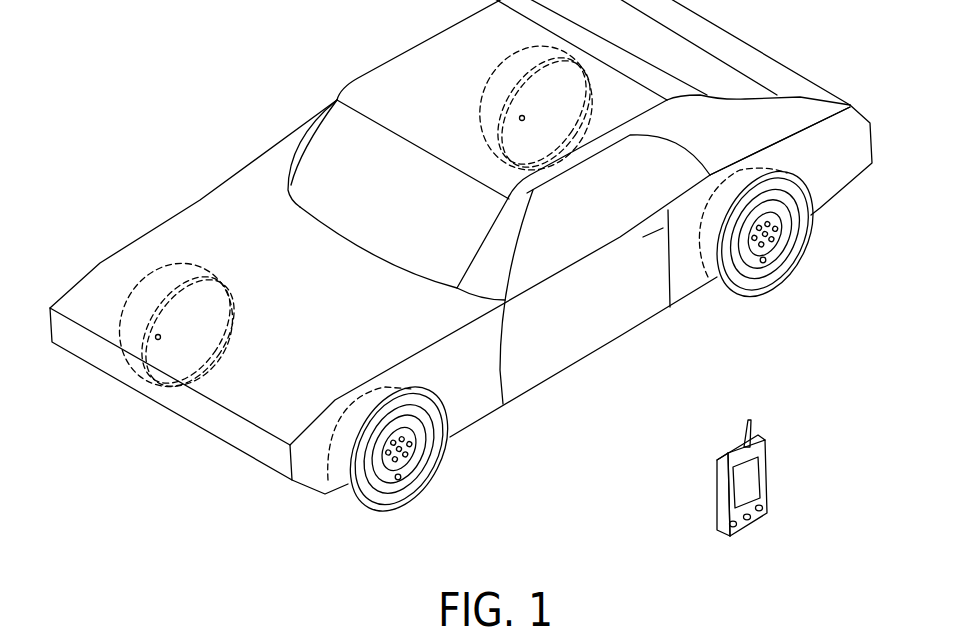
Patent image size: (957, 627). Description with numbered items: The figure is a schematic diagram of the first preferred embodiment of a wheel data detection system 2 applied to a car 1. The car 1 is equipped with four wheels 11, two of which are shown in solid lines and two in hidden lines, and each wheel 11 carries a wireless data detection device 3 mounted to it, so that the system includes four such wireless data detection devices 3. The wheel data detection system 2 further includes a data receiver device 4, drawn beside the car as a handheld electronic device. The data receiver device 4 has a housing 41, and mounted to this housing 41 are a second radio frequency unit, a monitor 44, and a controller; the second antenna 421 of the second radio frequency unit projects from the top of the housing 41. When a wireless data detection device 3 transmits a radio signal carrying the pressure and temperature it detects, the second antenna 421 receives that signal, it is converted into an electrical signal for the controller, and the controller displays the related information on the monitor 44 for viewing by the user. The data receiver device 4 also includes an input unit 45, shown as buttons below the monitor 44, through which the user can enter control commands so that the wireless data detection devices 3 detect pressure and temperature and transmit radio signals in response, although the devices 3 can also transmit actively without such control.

The car 1 is at (225, 213).
The wheel 11 is at (427, 476).
The wireless data detection device 3 is at (399, 481).
The wheel data detection system 2 is at (743, 481).
The data receiver device 4 is at (717, 480).
The housing 41 is at (728, 495).
The second antenna 421 is at (746, 430).
The monitor 44 is at (750, 481).
The input unit 45 is at (747, 523).